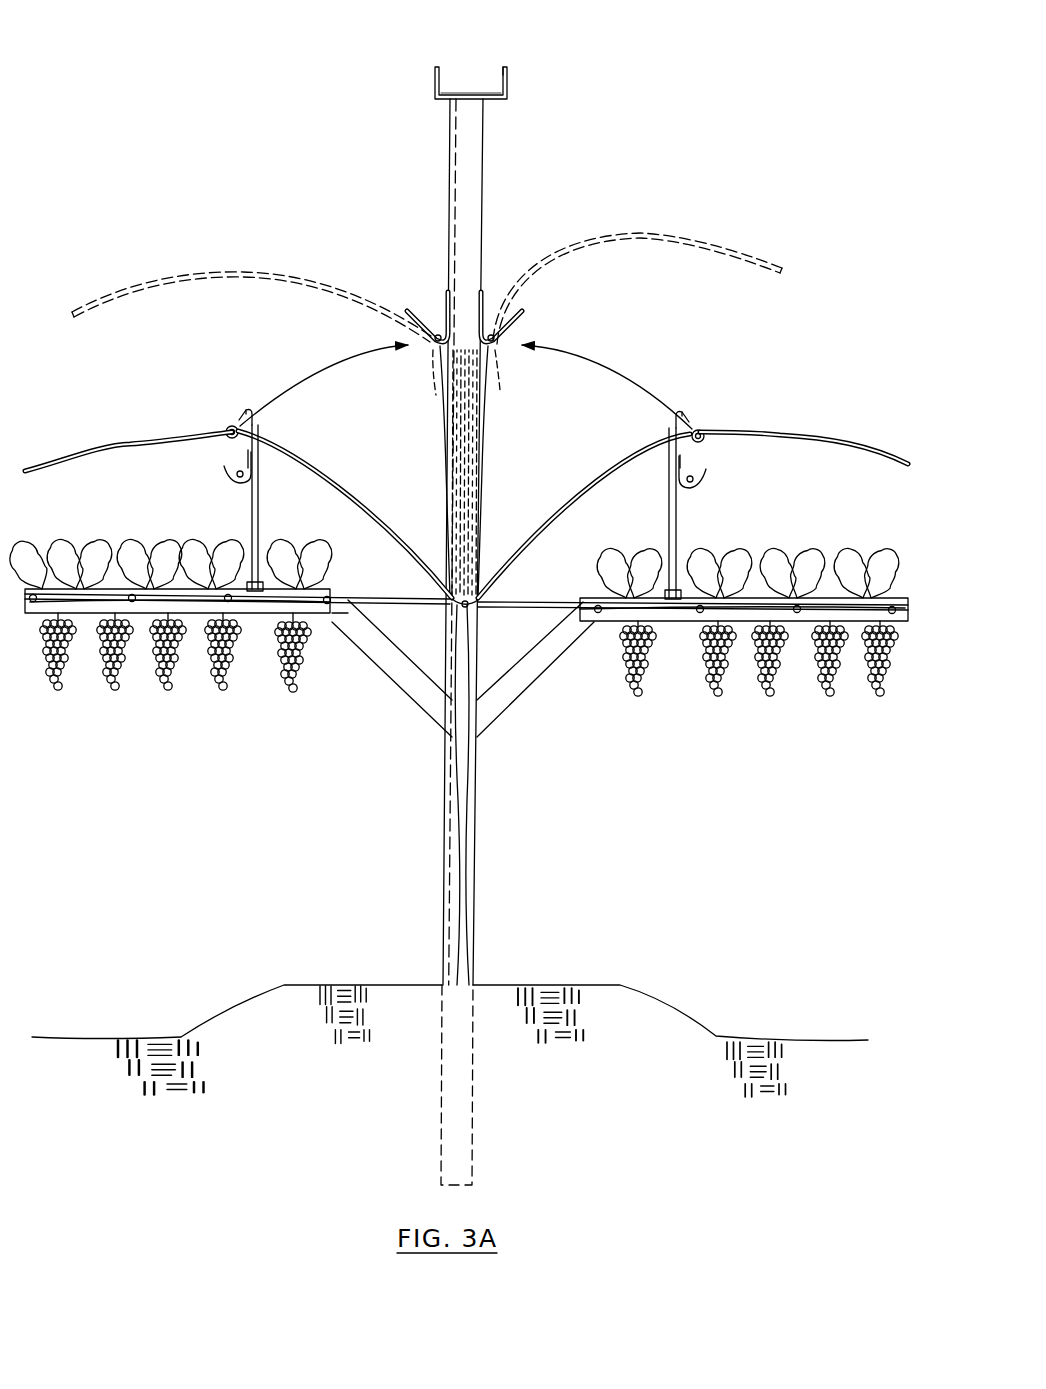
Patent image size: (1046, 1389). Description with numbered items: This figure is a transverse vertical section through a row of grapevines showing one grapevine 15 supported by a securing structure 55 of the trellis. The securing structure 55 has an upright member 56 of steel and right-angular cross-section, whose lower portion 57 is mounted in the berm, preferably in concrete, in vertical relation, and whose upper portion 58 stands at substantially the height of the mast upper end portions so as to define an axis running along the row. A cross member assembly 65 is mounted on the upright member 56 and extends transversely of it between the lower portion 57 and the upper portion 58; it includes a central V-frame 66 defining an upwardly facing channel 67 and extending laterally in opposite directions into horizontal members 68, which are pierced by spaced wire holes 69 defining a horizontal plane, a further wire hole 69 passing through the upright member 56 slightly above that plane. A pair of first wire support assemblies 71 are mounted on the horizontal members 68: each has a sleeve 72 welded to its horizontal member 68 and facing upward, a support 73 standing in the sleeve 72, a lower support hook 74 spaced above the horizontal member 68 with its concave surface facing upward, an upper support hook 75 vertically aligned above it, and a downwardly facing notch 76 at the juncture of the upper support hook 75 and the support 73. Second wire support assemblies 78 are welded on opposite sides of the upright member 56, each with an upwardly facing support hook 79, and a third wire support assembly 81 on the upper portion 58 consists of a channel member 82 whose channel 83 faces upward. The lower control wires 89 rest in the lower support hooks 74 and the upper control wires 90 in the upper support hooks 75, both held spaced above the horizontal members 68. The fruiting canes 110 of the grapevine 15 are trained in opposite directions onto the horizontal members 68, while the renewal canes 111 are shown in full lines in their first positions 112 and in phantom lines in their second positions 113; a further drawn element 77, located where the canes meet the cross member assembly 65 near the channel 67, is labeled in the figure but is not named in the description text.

The grapevine 15 is at (455, 873).
The securing structure 55 is at (504, 122).
The upright member 56 is at (480, 432).
The lower portion 57 is at (473, 975).
The upper portion 58 is at (450, 144).
The cross member assembly 65 is at (427, 713).
The central V-frame 66 is at (407, 668).
The channel 67 is at (410, 627).
The horizontal member 68 is at (190, 614).
The wire hole 69 is at (35, 602).
The first wire support assembly 71 is at (265, 524).
The sleeve 72 is at (261, 578).
The support 73 is at (252, 505).
The lower support hook 74 is at (228, 468).
The upper support hook 75 is at (218, 420).
The notch 76 is at (262, 428).
The junction clamp 77 is at (466, 612).
The second wire support assembly 78 is at (421, 348).
The support hook 79 is at (417, 310).
The third wire support assembly 81 is at (508, 70).
The channel member 82 is at (437, 80).
The channel 83 is at (467, 90).
The lower control wire 89 is at (251, 466).
The upper control wire 90 is at (231, 425).
The fruiting cane 110 is at (398, 589).
The renewal cane 111 is at (386, 490).
The first position 112 is at (120, 436).
The second position 113 is at (249, 268).